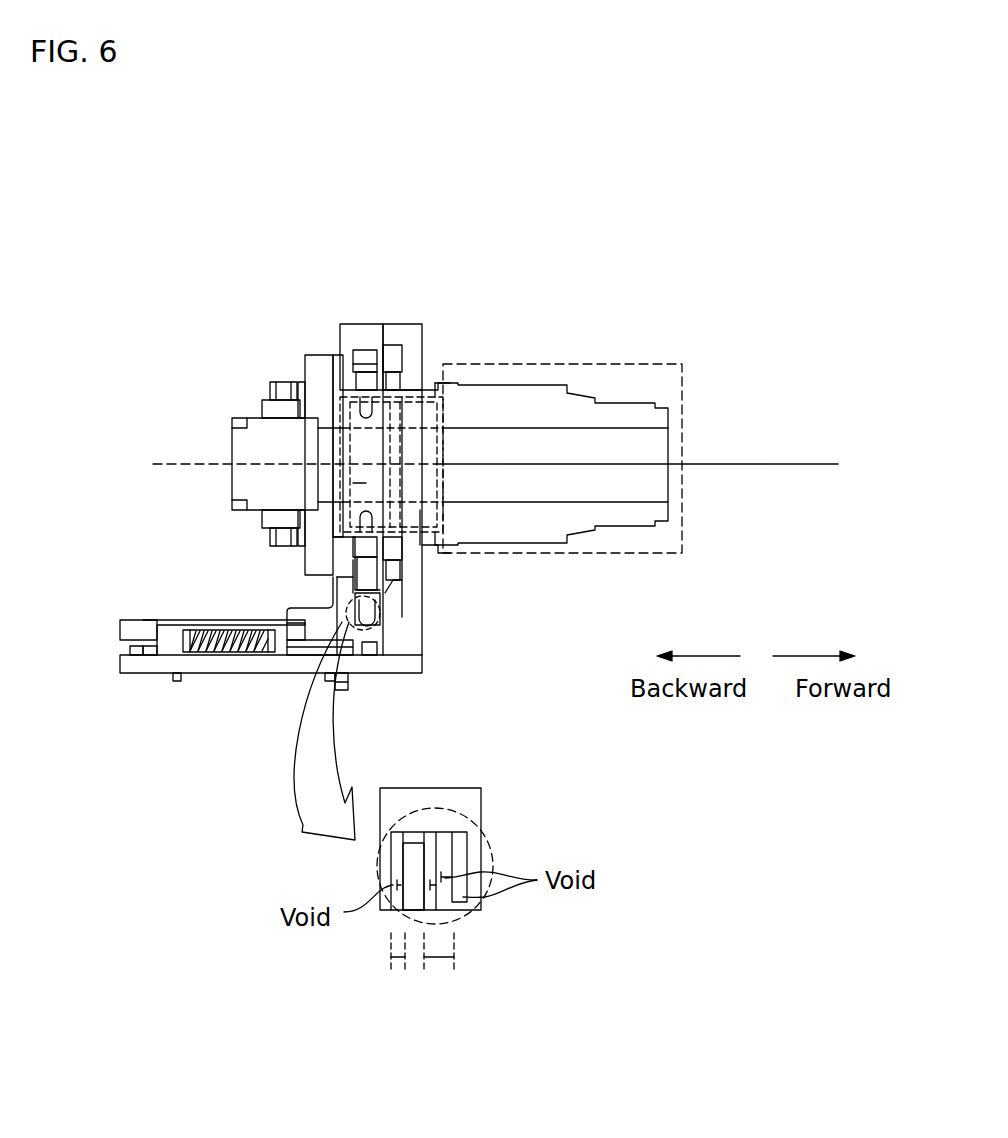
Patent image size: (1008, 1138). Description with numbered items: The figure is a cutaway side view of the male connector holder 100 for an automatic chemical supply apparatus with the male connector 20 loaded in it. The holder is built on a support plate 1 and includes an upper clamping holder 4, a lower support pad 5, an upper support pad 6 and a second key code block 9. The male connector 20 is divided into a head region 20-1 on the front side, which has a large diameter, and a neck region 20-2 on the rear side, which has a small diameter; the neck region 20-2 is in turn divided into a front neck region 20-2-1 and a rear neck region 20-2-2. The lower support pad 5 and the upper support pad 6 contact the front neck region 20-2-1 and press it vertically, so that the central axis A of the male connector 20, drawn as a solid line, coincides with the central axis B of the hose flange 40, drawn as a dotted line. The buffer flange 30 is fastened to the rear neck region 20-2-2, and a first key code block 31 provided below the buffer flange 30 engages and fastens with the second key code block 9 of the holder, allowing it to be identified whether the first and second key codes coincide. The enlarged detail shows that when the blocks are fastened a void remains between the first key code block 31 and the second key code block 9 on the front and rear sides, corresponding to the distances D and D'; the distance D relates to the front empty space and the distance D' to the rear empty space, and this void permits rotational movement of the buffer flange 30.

The male connector holder 100 is at (307, 223).
The support plate 1 is at (121, 648).
The upper clamping holder 4 is at (358, 331).
The lower support pad 5 is at (415, 637).
The upper support pad 6 is at (414, 333).
The second key code block 9 is at (415, 865).
The male connector 20 is at (588, 385).
The head region 20-1 is at (640, 366).
The neck region 20-2 is at (412, 396).
The front neck region 20-2-1 is at (420, 510).
The rear neck region 20-2-2 is at (364, 483).
The buffer flange 30 is at (367, 363).
The first key code block 31 is at (352, 596).
The hose flange 40 is at (246, 413).
The central axis of the male connector A is at (813, 465).
The central axis of the hose flange B is at (166, 463).
The distance D is at (445, 986).
The distance D' is at (398, 986).